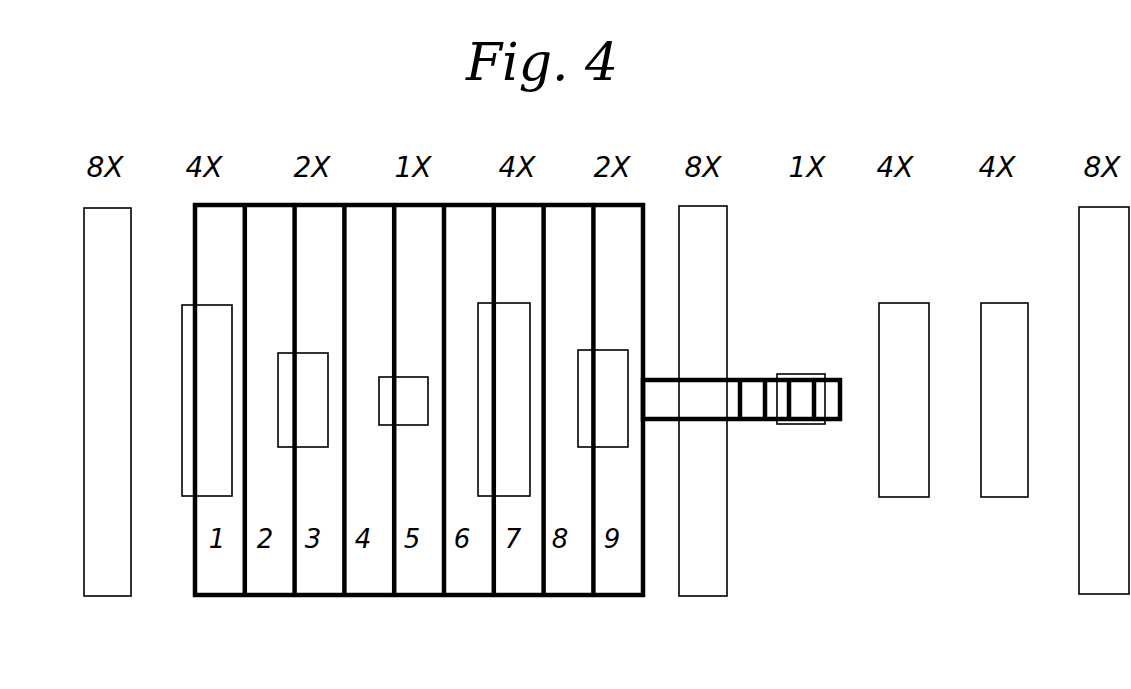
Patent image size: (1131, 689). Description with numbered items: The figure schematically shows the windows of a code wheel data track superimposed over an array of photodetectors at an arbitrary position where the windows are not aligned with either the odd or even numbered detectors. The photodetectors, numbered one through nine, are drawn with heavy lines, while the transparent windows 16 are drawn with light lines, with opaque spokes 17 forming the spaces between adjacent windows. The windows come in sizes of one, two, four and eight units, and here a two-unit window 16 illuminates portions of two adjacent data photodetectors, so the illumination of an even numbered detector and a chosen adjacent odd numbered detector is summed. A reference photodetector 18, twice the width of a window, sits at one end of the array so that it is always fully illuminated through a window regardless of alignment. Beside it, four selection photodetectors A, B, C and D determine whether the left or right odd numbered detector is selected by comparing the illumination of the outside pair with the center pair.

The transparent window 16 is at (315, 437).
The opaque spoke 17 is at (945, 340).
The reference photodetector 18 is at (733, 380).